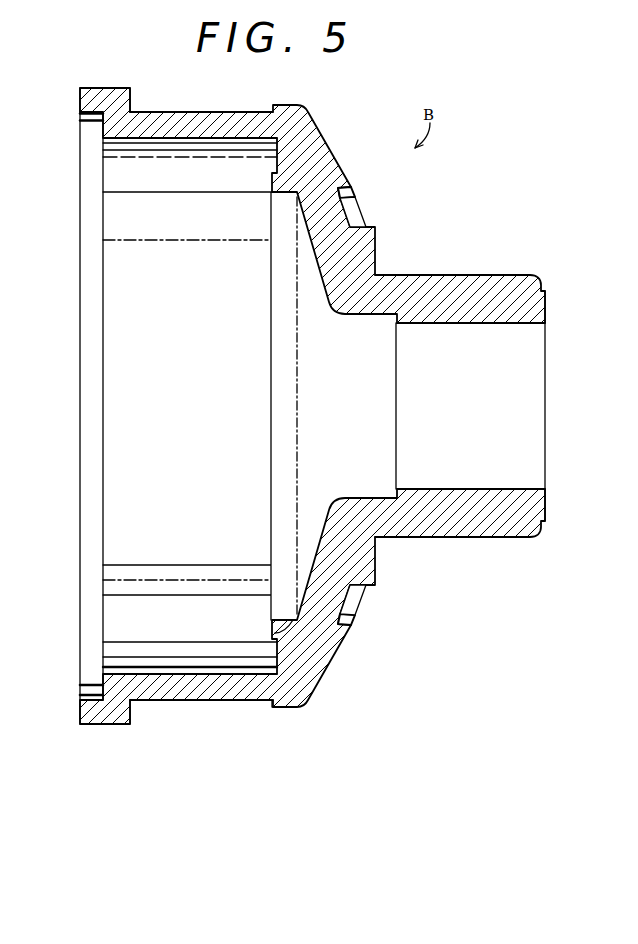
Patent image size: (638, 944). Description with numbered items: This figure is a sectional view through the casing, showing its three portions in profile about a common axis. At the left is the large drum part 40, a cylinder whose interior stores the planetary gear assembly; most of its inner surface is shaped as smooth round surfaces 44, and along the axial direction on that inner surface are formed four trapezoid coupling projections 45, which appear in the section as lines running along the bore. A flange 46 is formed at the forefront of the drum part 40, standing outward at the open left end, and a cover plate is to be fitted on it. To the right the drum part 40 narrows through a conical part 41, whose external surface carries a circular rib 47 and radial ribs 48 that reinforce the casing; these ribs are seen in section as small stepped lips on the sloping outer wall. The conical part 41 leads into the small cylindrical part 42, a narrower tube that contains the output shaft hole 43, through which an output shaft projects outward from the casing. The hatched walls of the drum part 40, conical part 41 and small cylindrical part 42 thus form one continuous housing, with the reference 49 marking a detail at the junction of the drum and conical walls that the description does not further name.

The drum part 40 is at (180, 118).
The conical part 41 is at (315, 173).
The small cylindrical part 42 is at (508, 293).
The output shaft hole 43 is at (540, 455).
The smooth round surfaces 44 is at (263, 108).
The trapezoid coupling projections 45 is at (120, 268).
The flange 46 is at (92, 104).
The circular rib 47 is at (355, 187).
The radial ribs 48 is at (353, 212).
The rounded corner 49 is at (291, 633).